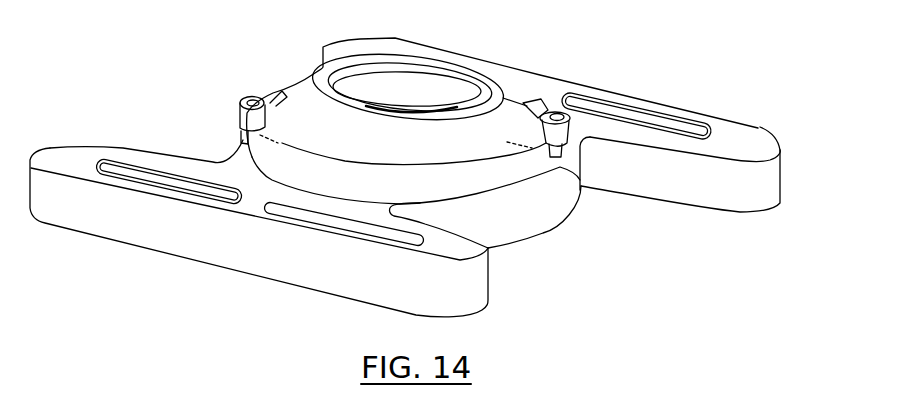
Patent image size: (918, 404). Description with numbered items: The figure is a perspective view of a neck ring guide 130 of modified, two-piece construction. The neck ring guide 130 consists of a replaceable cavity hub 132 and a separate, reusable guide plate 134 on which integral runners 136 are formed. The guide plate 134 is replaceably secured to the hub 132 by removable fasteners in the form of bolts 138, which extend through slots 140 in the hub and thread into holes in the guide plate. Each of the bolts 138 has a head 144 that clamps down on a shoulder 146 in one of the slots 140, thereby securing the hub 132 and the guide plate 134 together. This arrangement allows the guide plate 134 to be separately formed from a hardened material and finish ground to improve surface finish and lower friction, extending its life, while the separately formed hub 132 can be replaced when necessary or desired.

The neck ring guide 130 is at (588, 240).
The cavity hub 132 is at (511, 90).
The guide plate 134 is at (219, 170).
The runners 136 is at (171, 242).
The bolts 138 is at (238, 138).
The slots 140 is at (281, 90).
The heads 144 is at (243, 98).
The shoulders 146 is at (551, 153).